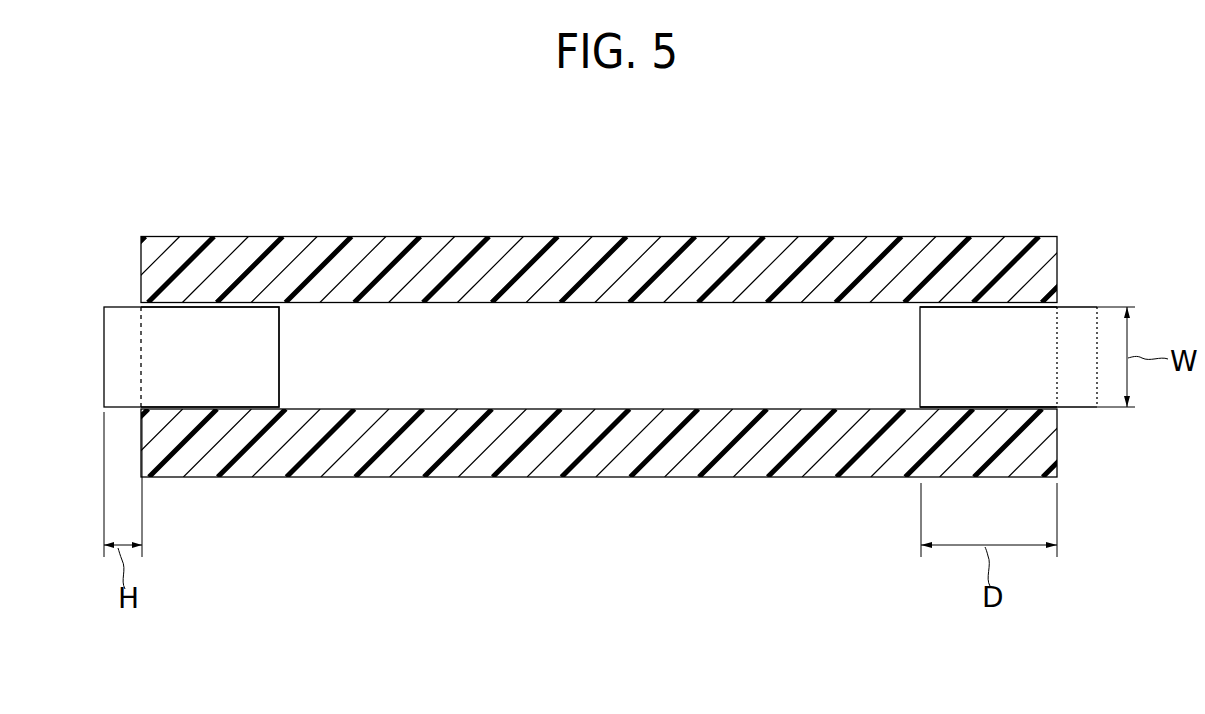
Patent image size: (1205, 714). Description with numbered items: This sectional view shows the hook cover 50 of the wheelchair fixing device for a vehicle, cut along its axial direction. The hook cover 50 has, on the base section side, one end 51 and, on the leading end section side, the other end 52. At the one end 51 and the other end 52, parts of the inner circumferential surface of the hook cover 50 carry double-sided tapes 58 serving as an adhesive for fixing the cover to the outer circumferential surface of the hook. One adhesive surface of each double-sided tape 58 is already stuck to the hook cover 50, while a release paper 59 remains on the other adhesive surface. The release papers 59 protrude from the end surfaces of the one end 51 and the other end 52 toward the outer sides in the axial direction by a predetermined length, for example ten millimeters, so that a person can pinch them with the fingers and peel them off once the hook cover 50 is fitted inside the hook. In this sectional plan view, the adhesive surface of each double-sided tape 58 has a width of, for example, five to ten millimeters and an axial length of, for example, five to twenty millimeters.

The hook cover 50 is at (583, 307).
The one end 51 is at (141, 237).
The other end 52 is at (1058, 236).
The double-sided tape 58 is at (253, 353).
The release paper 59 is at (117, 355).